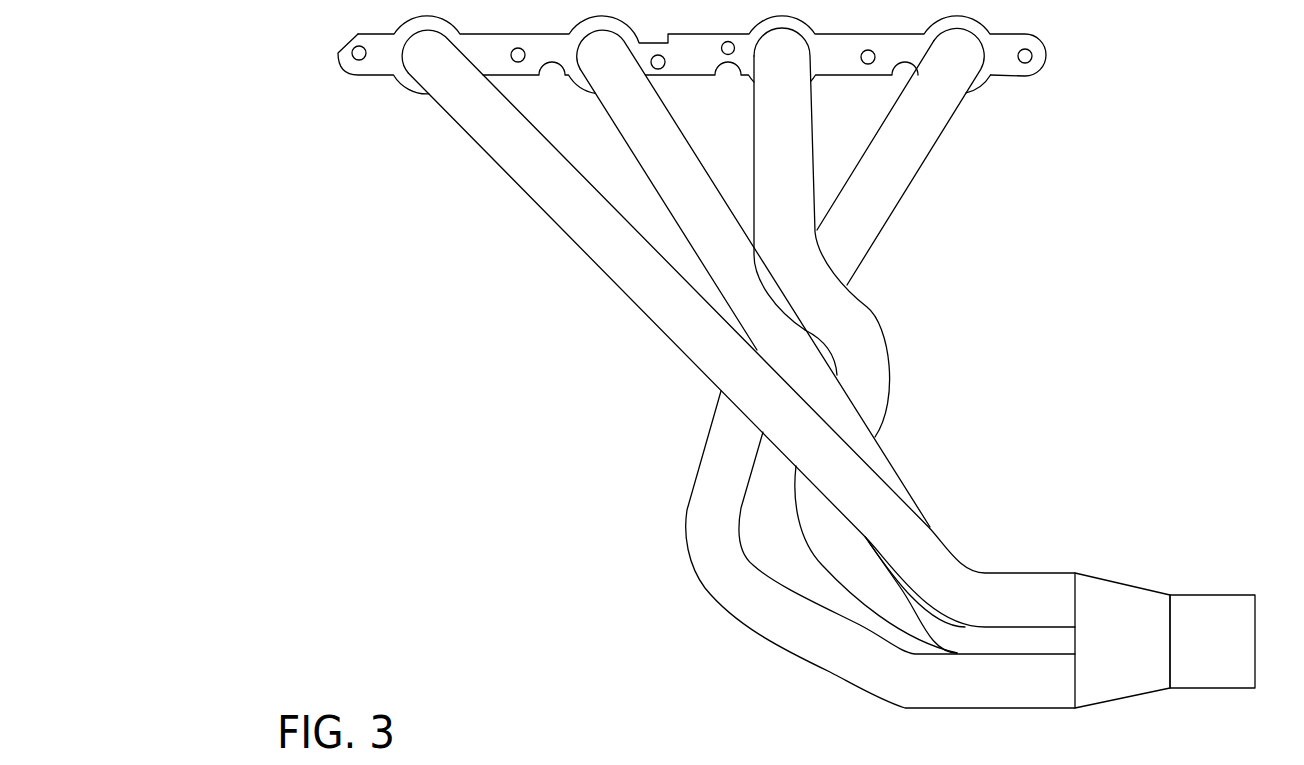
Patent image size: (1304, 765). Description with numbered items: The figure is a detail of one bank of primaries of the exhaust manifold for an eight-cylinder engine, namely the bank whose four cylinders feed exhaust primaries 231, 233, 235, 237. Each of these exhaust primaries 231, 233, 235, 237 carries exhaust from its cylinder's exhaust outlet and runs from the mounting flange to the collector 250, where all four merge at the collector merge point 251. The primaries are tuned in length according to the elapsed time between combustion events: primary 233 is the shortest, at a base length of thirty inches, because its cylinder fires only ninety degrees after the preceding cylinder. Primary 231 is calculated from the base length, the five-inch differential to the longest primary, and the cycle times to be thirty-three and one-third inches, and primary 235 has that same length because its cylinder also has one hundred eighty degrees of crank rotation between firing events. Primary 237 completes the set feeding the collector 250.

The exhaust primary 231 is at (585, 227).
The exhaust primary 233 is at (738, 288).
The exhaust primary 235 is at (787, 172).
The exhaust primary 237 is at (858, 232).
The collector 250 is at (1212, 607).
The collector merge point 251 is at (1075, 573).